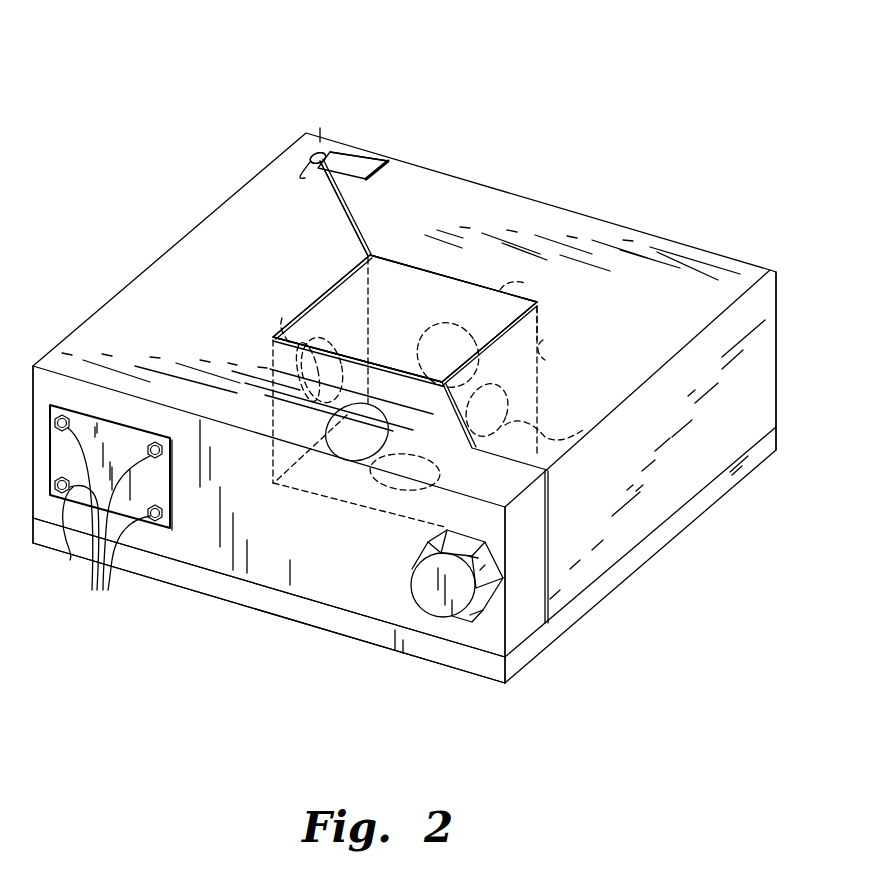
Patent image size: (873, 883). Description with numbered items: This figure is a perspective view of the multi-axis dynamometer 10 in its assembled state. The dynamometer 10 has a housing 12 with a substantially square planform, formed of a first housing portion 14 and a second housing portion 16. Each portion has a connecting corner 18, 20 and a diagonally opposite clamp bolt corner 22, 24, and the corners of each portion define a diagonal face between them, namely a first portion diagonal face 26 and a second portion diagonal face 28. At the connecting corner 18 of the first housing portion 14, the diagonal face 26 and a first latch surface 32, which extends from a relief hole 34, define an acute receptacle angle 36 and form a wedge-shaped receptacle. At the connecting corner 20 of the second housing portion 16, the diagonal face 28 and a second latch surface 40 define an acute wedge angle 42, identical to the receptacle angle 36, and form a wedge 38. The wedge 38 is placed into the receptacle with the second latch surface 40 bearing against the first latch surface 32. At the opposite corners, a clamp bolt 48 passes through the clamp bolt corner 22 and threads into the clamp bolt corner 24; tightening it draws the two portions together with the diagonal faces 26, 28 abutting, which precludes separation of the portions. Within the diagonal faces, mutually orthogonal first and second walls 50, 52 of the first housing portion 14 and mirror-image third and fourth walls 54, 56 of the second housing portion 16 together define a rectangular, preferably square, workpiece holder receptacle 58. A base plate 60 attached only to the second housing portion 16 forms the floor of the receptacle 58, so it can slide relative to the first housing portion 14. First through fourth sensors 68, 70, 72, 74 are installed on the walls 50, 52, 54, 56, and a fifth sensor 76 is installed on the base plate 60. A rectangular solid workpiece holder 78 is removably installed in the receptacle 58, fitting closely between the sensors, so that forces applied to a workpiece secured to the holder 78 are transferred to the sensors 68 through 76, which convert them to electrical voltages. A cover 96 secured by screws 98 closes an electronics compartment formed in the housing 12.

The multi-axis dynamometer 10 is at (96, 68).
The housing 12 is at (552, 182).
The first housing portion 14 is at (165, 250).
The second housing portion 16 is at (727, 257).
The connecting corner 18 is at (300, 145).
The connecting corner 20 is at (333, 151).
The clamp bolt corner 22 is at (507, 631).
The clamp bolt corner 24 is at (475, 452).
The first portion diagonal face 26 is at (363, 207).
The second portion diagonal face 28 is at (342, 212).
The first latch surface 32 is at (305, 178).
The relief hole 34 is at (320, 128).
The acute receptacle angle 36 is at (365, 178).
The wedge 38 is at (366, 238).
The second latch surface 40 is at (365, 140).
The acute wedge angle 42 is at (412, 147).
The clamp bolt 48 is at (440, 622).
The first wall 50 is at (392, 260).
The second wall 52 is at (300, 335).
The third wall 54 is at (505, 290).
The fourth wall 56 is at (543, 340).
The workpiece holder receptacle 58 is at (468, 268).
The base plate 60 is at (236, 605).
The first sensor 68 is at (275, 362).
The second sensor 70 is at (340, 513).
The third sensor 72 is at (417, 362).
The fourth sensor 74 is at (540, 432).
The fifth sensor 76 is at (374, 520).
The workpiece holder 78 is at (437, 302).
The cover 96 is at (72, 556).
The screws 98 is at (106, 521).